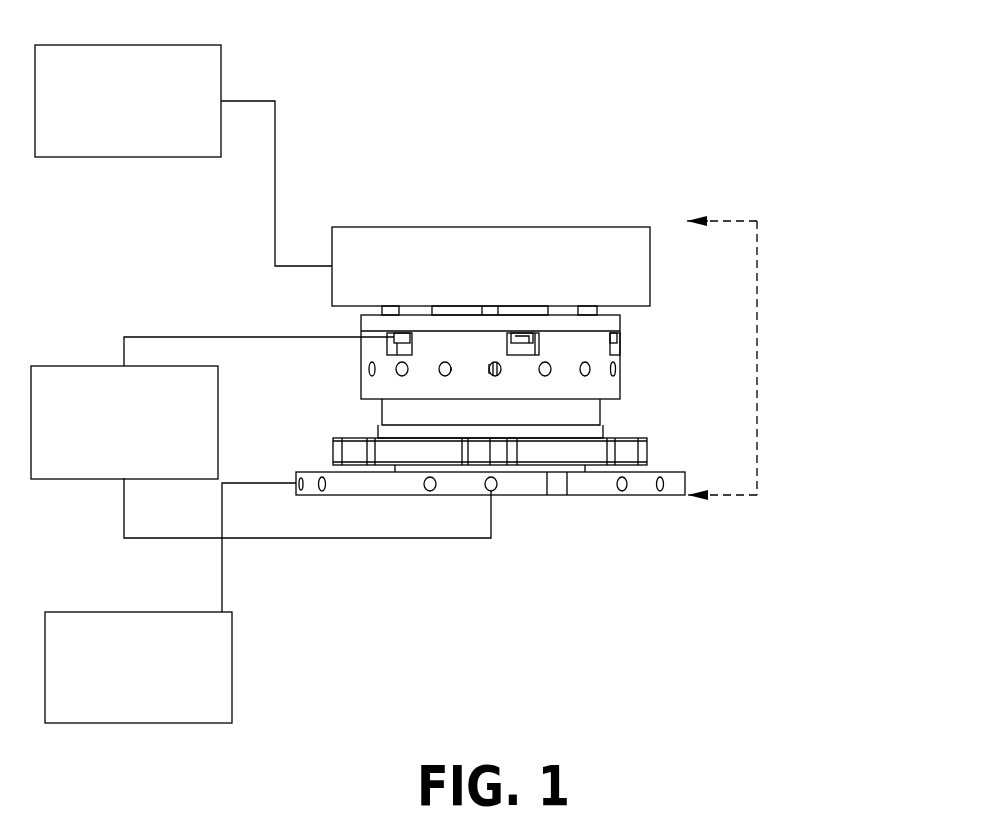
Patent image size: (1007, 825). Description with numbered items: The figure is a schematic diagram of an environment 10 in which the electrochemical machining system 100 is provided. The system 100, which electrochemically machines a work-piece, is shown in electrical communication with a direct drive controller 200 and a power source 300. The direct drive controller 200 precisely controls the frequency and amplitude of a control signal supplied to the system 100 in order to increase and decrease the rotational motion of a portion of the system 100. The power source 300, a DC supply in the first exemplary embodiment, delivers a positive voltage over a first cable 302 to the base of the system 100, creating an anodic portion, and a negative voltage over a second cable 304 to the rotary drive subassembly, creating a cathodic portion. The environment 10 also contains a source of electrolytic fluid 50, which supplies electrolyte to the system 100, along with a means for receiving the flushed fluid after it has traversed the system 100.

The environment 10 is at (627, 598).
The source of electrolytic fluid 50 is at (126, 698).
The system 100 is at (743, 221).
The direct drive controller 200 is at (110, 134).
The power source 300 is at (106, 453).
The first cable 302 is at (429, 540).
The second cable 304 is at (146, 337).